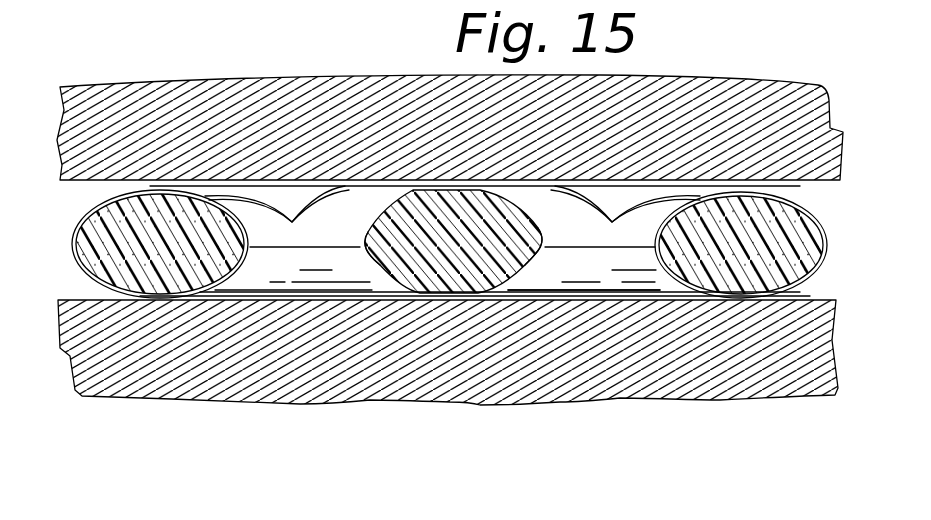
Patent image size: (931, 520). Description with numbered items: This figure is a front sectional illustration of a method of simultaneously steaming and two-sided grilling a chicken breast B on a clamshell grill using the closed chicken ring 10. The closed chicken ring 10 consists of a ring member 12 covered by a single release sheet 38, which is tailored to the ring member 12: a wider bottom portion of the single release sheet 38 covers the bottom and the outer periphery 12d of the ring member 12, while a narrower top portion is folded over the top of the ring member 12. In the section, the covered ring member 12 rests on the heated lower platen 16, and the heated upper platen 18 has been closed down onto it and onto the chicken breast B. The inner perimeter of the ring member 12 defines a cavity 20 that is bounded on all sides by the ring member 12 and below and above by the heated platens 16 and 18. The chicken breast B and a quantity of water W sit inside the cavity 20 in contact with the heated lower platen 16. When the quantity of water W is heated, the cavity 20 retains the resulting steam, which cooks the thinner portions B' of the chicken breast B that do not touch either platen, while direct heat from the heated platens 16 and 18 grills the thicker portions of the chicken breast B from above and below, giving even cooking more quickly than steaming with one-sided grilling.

The closed chicken ring 10 is at (66, 204).
The ring member 12 is at (108, 257).
The outer periphery 12d is at (825, 247).
The heated lower platen 16 is at (678, 370).
The heated upper platen 18 is at (760, 115).
The cavity 20 is at (636, 226).
The single release sheet 38 is at (790, 187).
The chicken breast B is at (444, 241).
The thinner portions B' is at (455, 232).
The quantity of water W is at (598, 290).